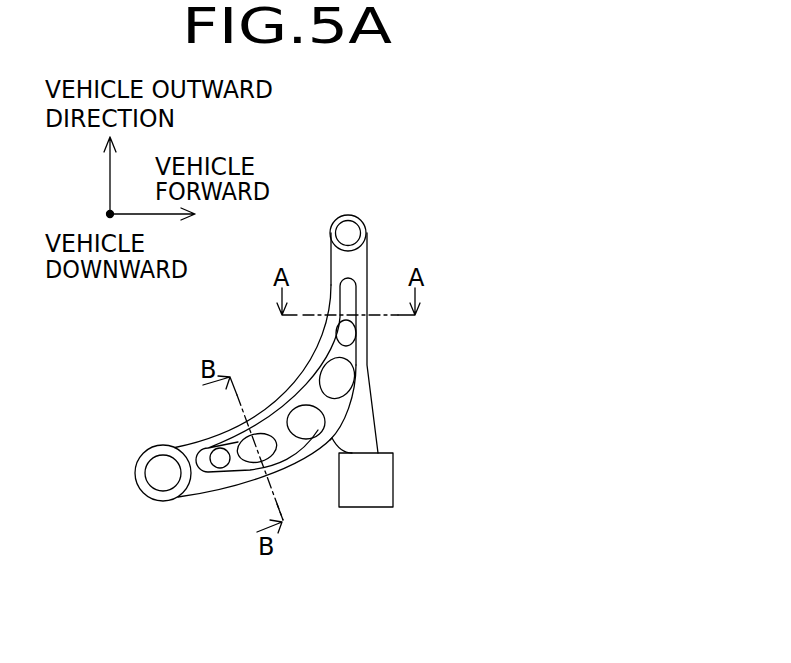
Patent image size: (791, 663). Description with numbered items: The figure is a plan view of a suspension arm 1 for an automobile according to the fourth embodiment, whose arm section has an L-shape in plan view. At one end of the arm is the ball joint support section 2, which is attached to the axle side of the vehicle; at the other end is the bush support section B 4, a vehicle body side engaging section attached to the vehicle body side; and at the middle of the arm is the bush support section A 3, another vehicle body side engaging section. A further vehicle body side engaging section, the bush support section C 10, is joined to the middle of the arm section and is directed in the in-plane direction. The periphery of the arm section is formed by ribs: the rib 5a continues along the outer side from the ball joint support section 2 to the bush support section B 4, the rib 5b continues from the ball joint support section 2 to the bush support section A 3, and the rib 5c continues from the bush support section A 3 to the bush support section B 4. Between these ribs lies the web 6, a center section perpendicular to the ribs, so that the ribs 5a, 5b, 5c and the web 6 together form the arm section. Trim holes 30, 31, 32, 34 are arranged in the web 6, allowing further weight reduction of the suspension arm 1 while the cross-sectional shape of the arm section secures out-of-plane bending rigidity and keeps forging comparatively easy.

The suspension arm 1 is at (377, 256).
The ball joint support section 2 is at (348, 222).
The bush support section A 3 is at (220, 457).
The bush support section B 4 is at (135, 474).
The rib 5a is at (322, 353).
The rib 5b is at (358, 360).
The rib 5c is at (307, 458).
The web 6 is at (277, 425).
The bush support section C 10 is at (387, 480).
The trim hole 30 is at (250, 458).
The trim hole 31 is at (312, 420).
The trim hole 32 is at (337, 378).
The trim hole 34 is at (346, 333).